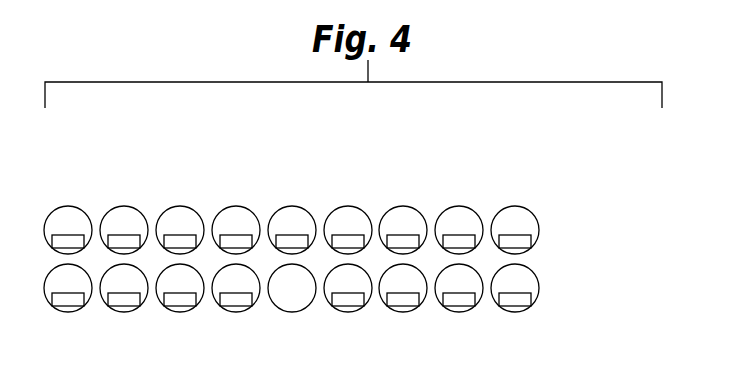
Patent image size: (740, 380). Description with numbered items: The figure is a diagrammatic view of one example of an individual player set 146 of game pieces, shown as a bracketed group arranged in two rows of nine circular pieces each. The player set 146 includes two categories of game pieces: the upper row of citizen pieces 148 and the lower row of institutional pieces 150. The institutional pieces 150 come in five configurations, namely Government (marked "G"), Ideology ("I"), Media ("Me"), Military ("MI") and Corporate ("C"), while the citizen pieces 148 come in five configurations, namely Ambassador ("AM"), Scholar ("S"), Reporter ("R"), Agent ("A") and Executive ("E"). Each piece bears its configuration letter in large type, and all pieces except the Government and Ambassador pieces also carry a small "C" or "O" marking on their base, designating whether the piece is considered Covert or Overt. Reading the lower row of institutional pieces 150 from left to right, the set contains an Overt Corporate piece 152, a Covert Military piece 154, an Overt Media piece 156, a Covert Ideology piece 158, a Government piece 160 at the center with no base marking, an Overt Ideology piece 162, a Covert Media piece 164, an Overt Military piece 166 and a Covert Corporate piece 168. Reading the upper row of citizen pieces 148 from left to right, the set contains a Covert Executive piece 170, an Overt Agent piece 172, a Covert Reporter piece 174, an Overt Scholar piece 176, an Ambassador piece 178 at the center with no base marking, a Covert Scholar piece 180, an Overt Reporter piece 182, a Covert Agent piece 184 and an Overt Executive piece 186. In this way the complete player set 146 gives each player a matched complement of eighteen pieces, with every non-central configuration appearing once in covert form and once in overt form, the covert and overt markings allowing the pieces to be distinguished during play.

The player set 146 is at (550, 167).
The citizen pieces 148 is at (567, 230).
The institutional pieces 150 is at (568, 292).
The Overt Corporate piece 152 is at (91, 304).
The Covert Military piece 154 is at (147, 304).
The Overt Media piece 156 is at (203, 304).
The Covert Ideology piece 158 is at (259, 304).
The Government piece 160 is at (315, 304).
The Overt Ideology piece 162 is at (371, 304).
The Covert Media piece 164 is at (426, 304).
The Overt Military piece 166 is at (482, 304).
The Covert Corporate piece 168 is at (538, 304).
The Covert Executive piece 170 is at (55, 212).
The Overt Agent piece 172 is at (111, 212).
The Covert Reporter piece 174 is at (167, 212).
The Overt Scholar piece 176 is at (223, 212).
The Ambassador piece 178 is at (279, 212).
The Covert Scholar piece 180 is at (335, 212).
The Overt Reporter piece 182 is at (390, 212).
The Covert Agent piece 184 is at (446, 212).
The Overt Executive piece 186 is at (502, 212).